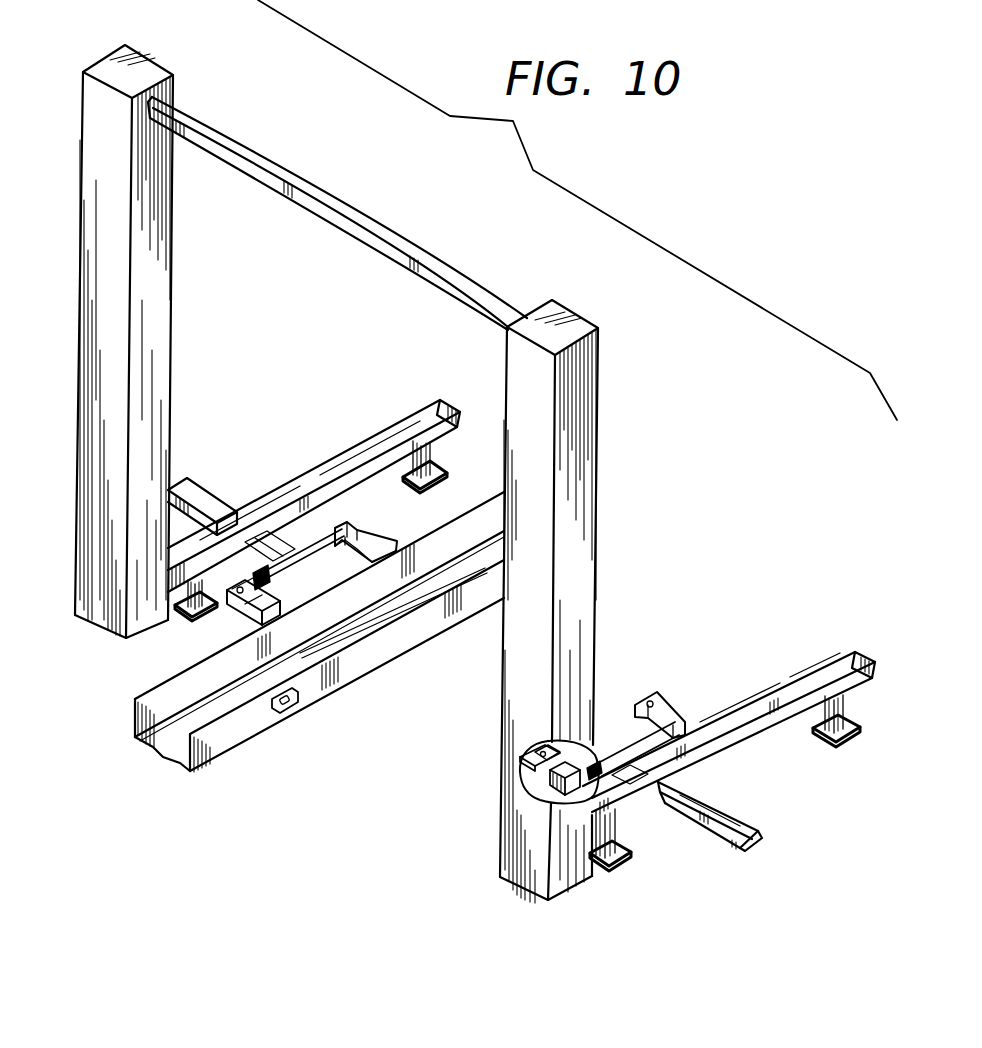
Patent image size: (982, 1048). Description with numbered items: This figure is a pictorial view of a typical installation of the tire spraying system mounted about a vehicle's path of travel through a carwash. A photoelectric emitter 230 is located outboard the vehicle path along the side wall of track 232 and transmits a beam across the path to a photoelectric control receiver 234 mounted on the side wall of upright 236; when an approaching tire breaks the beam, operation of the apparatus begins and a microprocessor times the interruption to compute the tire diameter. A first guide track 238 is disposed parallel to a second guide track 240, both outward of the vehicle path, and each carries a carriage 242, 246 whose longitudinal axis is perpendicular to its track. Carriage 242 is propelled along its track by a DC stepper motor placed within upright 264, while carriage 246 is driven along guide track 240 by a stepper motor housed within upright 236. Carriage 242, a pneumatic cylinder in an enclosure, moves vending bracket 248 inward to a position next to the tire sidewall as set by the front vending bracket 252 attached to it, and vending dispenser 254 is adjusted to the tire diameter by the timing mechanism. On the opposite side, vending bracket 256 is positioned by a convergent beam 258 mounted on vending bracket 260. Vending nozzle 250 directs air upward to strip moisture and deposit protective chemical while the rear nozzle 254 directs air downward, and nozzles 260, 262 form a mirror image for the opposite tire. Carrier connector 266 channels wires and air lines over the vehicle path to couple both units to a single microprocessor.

The photoelectric emitter 230 is at (290, 707).
The track 232 is at (327, 697).
The photoelectric control receiver 234 is at (500, 813).
The upright 236 is at (590, 492).
The first guide track 238 is at (437, 408).
The second guide track 240 is at (857, 648).
The carriage 242 is at (183, 487).
The carriage 246 is at (728, 845).
The vending bracket 248 is at (300, 573).
The vending nozzle 250 is at (388, 557).
The front vending bracket 252 is at (360, 527).
The vending dispenser 254 is at (255, 620).
The vending bracket 256 is at (617, 753).
The convergent beam 258 is at (650, 690).
The vending bracket 260 is at (700, 710).
The vending nozzle 262 is at (537, 897).
The upright 264 is at (135, 392).
The carrier connector 266 is at (387, 240).